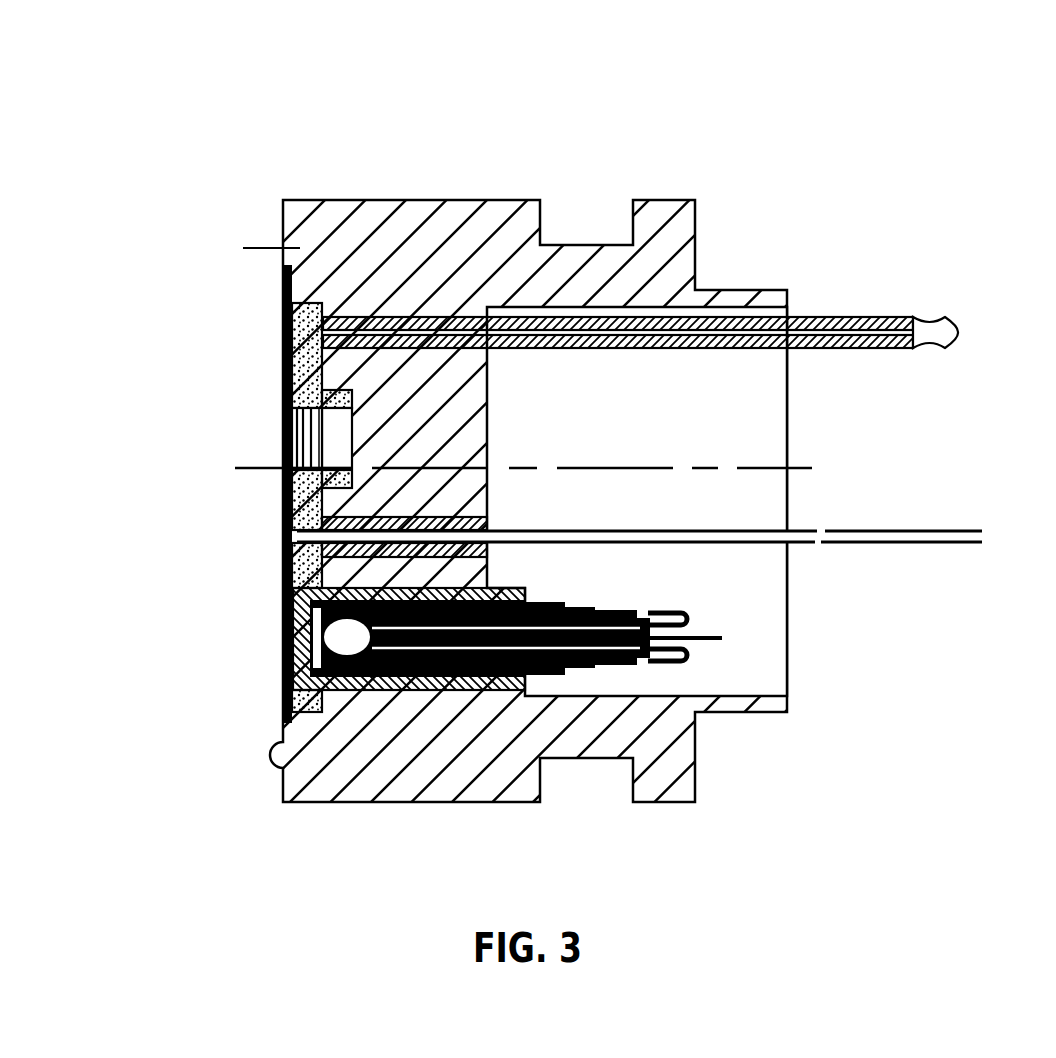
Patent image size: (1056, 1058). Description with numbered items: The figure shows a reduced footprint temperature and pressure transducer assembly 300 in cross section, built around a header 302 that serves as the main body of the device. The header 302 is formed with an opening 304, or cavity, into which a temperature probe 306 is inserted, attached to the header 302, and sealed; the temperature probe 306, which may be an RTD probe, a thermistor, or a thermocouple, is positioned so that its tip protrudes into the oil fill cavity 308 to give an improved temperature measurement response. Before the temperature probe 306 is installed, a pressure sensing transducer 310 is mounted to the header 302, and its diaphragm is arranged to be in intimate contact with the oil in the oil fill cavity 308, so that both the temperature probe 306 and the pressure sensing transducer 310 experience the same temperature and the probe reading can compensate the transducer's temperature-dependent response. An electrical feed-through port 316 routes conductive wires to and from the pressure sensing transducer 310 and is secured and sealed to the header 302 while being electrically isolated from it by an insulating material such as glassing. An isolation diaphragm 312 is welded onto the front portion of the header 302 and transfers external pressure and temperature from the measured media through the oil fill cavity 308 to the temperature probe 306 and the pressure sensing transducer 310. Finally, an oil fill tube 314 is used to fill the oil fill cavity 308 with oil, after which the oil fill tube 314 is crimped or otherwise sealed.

The reduced footprint temperature and pressure transducer assembly 300 is at (594, 90).
The header 302 is at (391, 212).
The opening 304 is at (447, 574).
The temperature probe 306 is at (346, 633).
The oil fill cavity 308 is at (313, 344).
The pressure sensing transducer 310 is at (334, 437).
The isolation diaphragm 312 is at (284, 301).
The oil fill tube 314 is at (870, 317).
The electrical feed-through port 316 is at (870, 530).